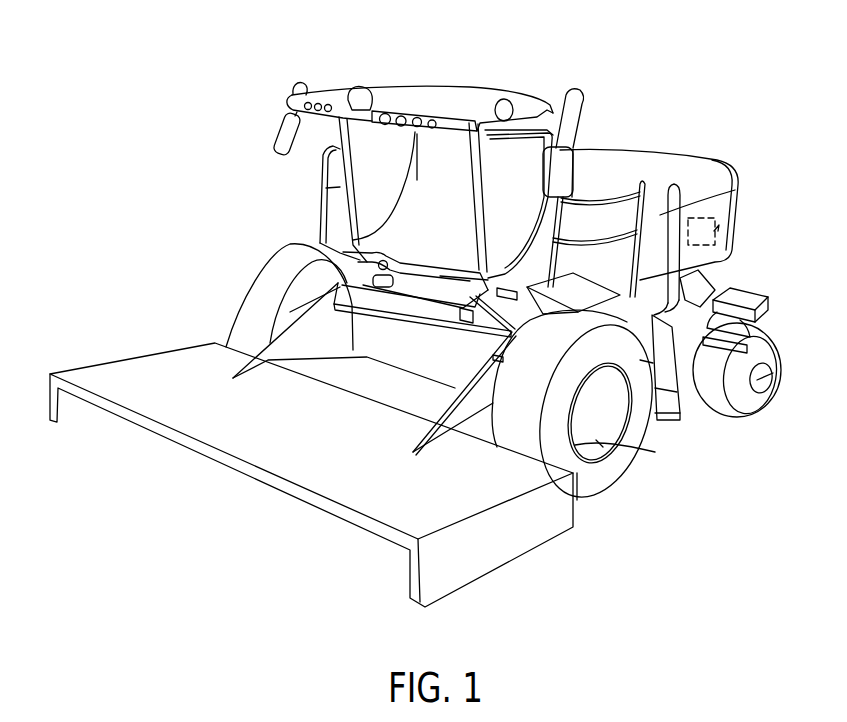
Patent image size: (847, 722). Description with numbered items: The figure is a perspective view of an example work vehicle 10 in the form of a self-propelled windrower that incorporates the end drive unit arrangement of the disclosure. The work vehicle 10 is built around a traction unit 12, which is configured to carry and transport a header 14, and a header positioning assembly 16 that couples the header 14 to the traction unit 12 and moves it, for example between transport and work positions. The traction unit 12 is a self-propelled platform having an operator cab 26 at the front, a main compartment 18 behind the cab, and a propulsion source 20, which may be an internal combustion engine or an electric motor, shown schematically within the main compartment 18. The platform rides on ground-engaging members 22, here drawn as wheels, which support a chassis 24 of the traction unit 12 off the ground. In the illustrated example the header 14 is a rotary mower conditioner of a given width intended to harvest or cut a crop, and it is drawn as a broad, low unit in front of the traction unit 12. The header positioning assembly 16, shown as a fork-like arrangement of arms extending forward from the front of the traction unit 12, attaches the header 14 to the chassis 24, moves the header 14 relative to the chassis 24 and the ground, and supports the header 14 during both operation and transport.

The work vehicle 10 is at (664, 103).
The traction unit 12 is at (673, 142).
The header 14 is at (315, 460).
The header positioning assembly 16 is at (330, 308).
The main compartment 18 is at (605, 168).
The propulsion source 20 is at (742, 215).
The ground-engaging members 22 is at (270, 270).
The chassis 24 is at (697, 288).
The operator cab 26 is at (448, 95).